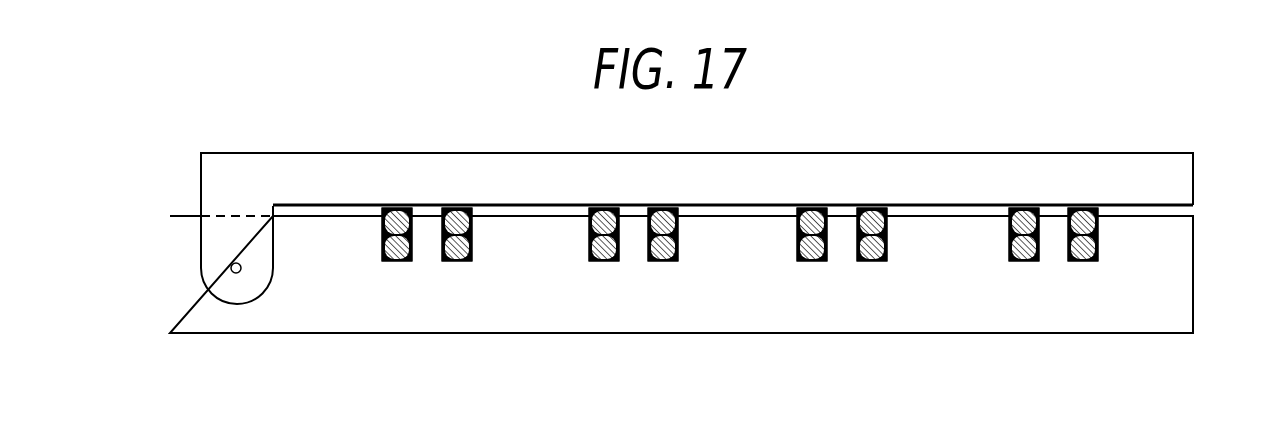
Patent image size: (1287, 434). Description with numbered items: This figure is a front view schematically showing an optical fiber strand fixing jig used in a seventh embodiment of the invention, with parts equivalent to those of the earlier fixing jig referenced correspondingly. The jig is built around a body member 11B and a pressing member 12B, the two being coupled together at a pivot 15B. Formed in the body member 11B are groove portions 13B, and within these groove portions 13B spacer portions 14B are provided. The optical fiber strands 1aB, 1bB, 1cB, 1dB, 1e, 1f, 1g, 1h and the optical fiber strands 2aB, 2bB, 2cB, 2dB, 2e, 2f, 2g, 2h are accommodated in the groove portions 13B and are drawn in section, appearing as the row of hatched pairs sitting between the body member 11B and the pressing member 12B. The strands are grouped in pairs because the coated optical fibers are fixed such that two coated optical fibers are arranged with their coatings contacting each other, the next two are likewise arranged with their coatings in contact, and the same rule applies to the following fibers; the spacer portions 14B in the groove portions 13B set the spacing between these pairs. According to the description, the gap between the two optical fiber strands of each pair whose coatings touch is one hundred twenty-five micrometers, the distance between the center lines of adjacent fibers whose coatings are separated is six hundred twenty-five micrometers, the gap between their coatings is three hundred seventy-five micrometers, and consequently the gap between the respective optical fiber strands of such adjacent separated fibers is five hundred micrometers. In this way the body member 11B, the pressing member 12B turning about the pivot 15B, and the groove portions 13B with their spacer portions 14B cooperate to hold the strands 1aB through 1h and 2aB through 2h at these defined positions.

The optical fiber strand 1aB is at (397, 208).
The optical fiber strand 1bB is at (457, 208).
The optical fiber strand 1cB is at (603, 208).
The optical fiber strand 1dB is at (664, 208).
The first capacitor element 1e is at (812, 208).
The first capacitor element 1f is at (872, 208).
The first capacitor element 1g is at (1022, 208).
The first capacitor element 1h is at (1082, 208).
The optical fiber strand 2aB is at (397, 261).
The optical fiber strand 2bB is at (455, 261).
The optical fiber strand 2cB is at (603, 261).
The optical fiber strand 2dB is at (664, 261).
The second capacitor element 2e is at (813, 261).
The second capacitor element 2f is at (873, 261).
The second capacitor element 2g is at (1022, 261).
The second capacitor element 2h is at (1083, 261).
The body member 11B is at (303, 315).
The pressing member 12B is at (255, 170).
The groove portions 13B is at (1113, 246).
The spacer portions 14B is at (944, 236).
The pivot 15B is at (236, 273).